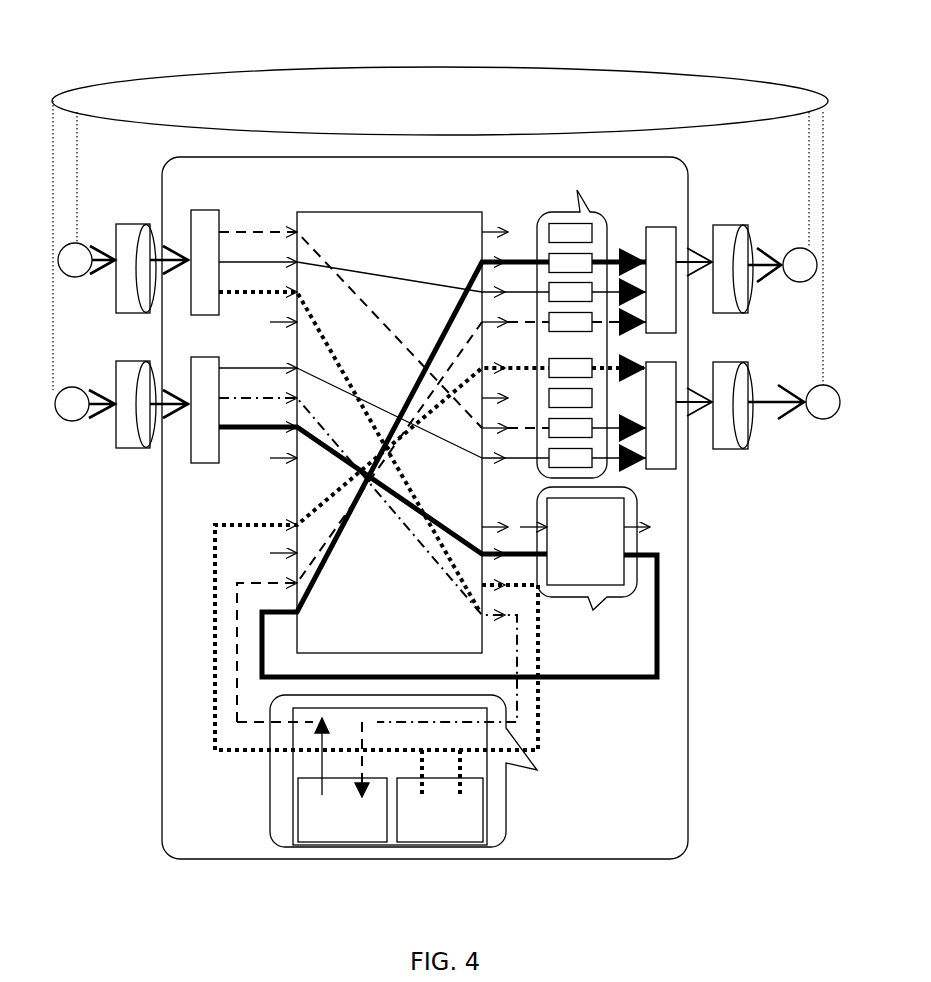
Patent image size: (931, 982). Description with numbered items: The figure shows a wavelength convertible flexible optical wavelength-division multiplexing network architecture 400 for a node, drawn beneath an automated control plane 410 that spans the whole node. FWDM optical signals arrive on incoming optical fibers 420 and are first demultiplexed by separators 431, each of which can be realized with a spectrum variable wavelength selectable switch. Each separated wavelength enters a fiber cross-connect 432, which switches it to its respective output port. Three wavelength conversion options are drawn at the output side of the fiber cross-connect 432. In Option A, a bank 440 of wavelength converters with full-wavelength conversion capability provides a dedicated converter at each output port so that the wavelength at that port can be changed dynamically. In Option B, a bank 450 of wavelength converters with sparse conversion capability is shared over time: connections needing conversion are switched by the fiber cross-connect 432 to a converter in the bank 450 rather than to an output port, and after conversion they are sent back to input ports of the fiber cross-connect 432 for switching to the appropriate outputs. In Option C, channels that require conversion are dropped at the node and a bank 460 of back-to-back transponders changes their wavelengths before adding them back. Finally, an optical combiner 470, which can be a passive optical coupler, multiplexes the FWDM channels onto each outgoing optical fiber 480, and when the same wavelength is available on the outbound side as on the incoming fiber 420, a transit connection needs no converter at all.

The wavelength convertible flexible optical wavelength-division multiplexing (WC-FWD 400 is at (493, 31).
The automated control plane 410 is at (668, 108).
The incoming optical fibers 420 is at (132, 224).
The separators (seps) 431 is at (203, 210).
The fiber cross-connect (OXC) 432 is at (370, 624).
The bank of wavelength converters with full-wavelength conversion capability 440 is at (597, 212).
The bank of wavelength converters with sparse wavelength conversion capability 450 is at (607, 600).
The bank of transponders 460 is at (506, 833).
The optical combiner 470 is at (663, 227).
The outgoing optical fibers 480 is at (728, 225).